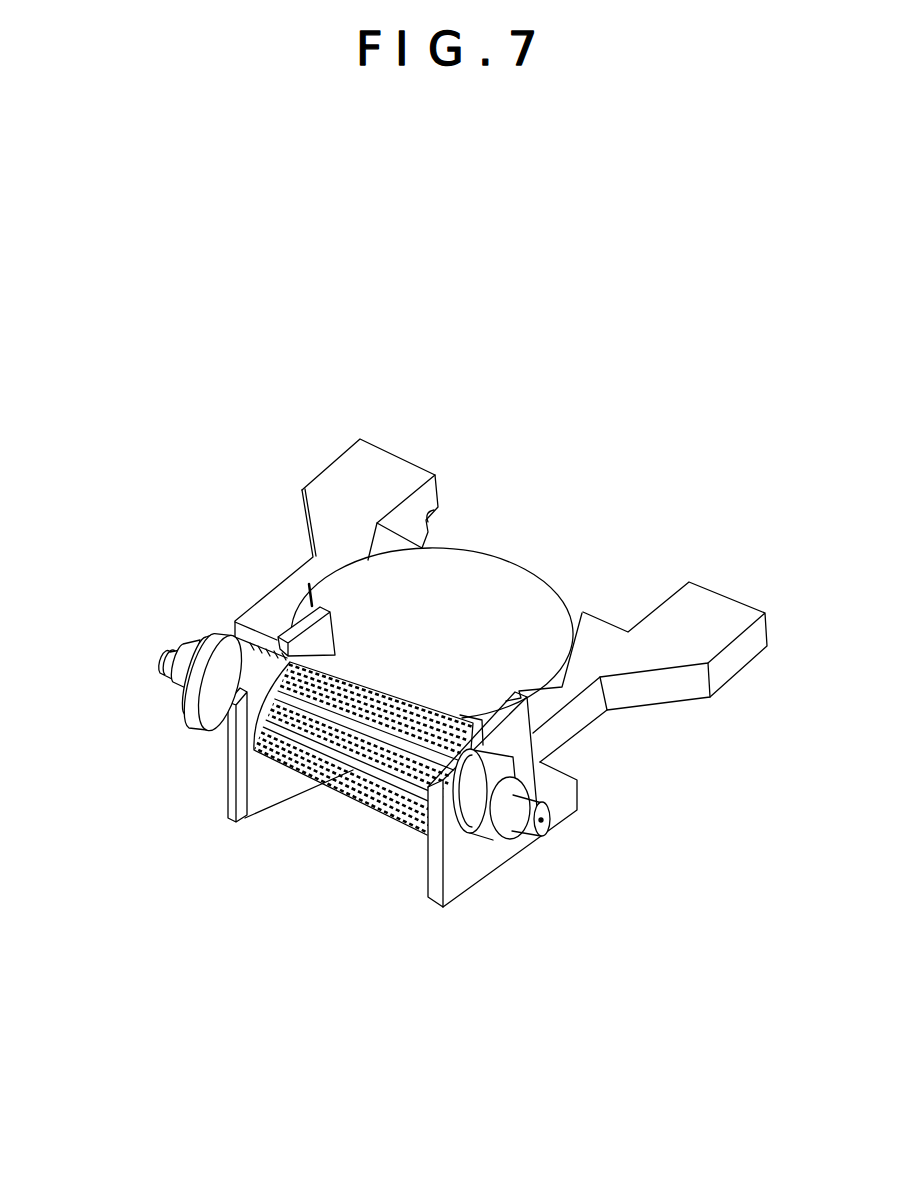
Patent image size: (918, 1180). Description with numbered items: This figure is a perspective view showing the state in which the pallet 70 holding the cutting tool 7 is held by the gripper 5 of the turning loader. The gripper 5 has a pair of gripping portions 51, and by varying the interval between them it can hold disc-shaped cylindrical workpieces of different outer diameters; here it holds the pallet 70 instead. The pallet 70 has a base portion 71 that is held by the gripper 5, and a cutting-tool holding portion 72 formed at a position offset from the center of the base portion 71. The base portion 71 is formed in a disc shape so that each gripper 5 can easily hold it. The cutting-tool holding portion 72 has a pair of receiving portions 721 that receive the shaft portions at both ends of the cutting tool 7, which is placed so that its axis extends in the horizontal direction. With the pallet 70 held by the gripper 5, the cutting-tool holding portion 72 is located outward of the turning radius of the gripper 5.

The gripper 5 is at (430, 437).
The pallet 70 is at (480, 515).
The base portion 71 is at (492, 613).
The gripping portions 51 is at (273, 607).
The cutting tool 7 is at (343, 797).
The cutting-tool holding portion 72 is at (529, 861).
The receiving portions 721 is at (227, 778).